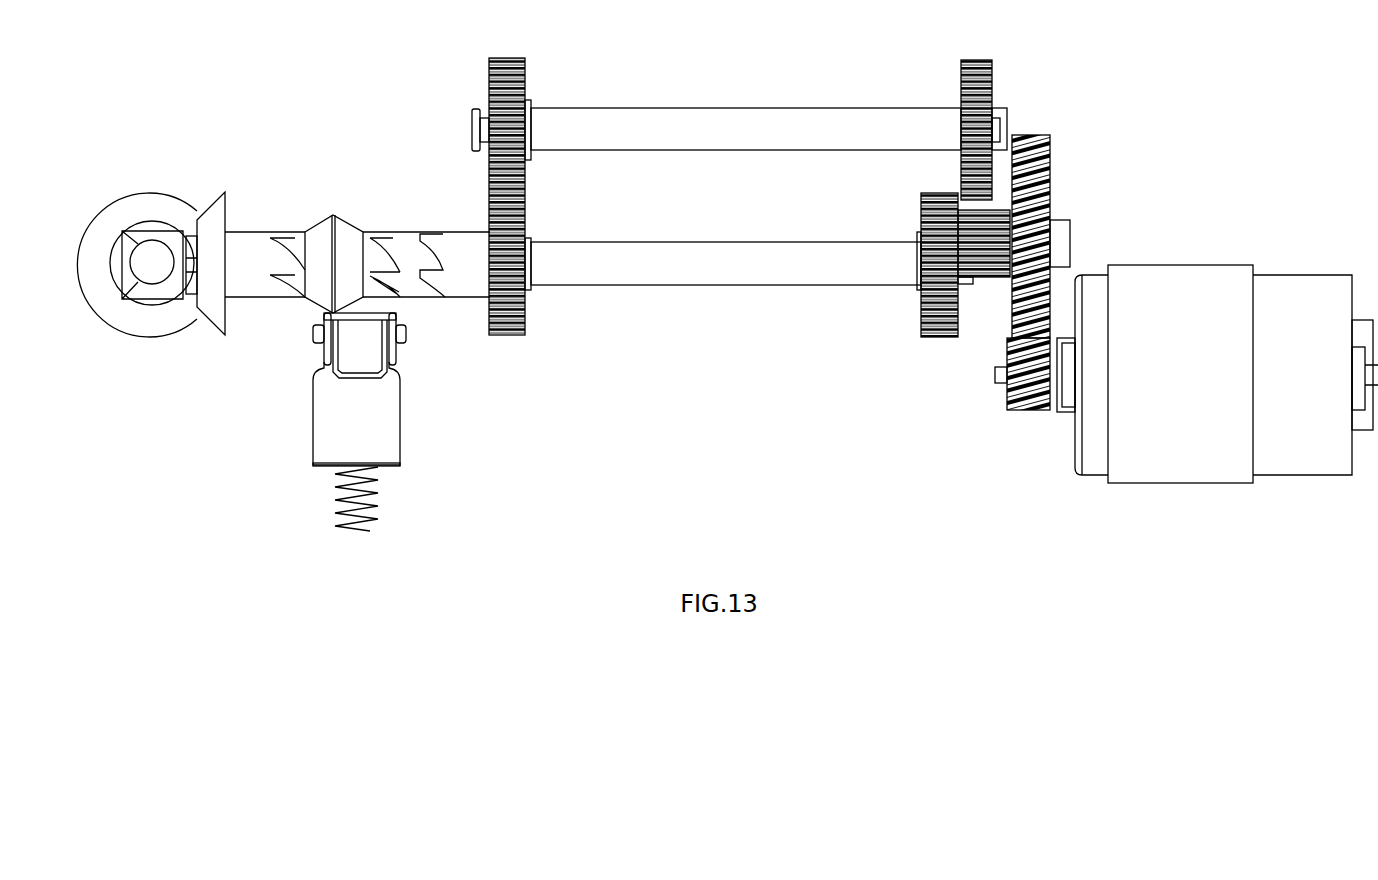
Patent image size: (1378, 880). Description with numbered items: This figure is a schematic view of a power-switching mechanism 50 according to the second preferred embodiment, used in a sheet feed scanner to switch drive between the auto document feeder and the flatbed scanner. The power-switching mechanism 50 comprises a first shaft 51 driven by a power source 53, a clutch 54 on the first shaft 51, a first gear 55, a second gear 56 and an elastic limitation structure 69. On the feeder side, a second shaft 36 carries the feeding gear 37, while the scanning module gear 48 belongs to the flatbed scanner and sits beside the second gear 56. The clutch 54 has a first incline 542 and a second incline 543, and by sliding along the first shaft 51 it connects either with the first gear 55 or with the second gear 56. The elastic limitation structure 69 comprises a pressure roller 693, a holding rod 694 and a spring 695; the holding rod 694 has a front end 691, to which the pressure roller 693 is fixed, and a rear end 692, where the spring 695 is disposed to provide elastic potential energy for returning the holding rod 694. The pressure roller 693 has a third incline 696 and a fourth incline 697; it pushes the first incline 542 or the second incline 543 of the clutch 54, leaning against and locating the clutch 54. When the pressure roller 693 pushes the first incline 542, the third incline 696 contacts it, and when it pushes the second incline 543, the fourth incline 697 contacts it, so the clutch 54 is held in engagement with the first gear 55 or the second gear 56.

The scanning module gear 48 is at (122, 212).
The second gear 56 is at (218, 221).
The clutch 54 is at (355, 218).
The first incline 542 is at (300, 282).
The second incline 543 is at (352, 302).
The feeding gear 37 is at (512, 62).
The first gear 55 is at (512, 237).
The second shaft 36 is at (782, 121).
The first shaft 51 is at (782, 258).
The power-switching mechanism 50 is at (1188, 93).
The power source 53 is at (1290, 287).
The elastic limitation structure 69 is at (484, 372).
The front end 691 is at (382, 355).
The rear end 692 is at (327, 468).
The pressure roller 693 is at (340, 337).
The holding rod 694 is at (385, 433).
The spring 695 is at (377, 503).
The third incline 696 is at (372, 303).
The fourth incline 697 is at (350, 325).